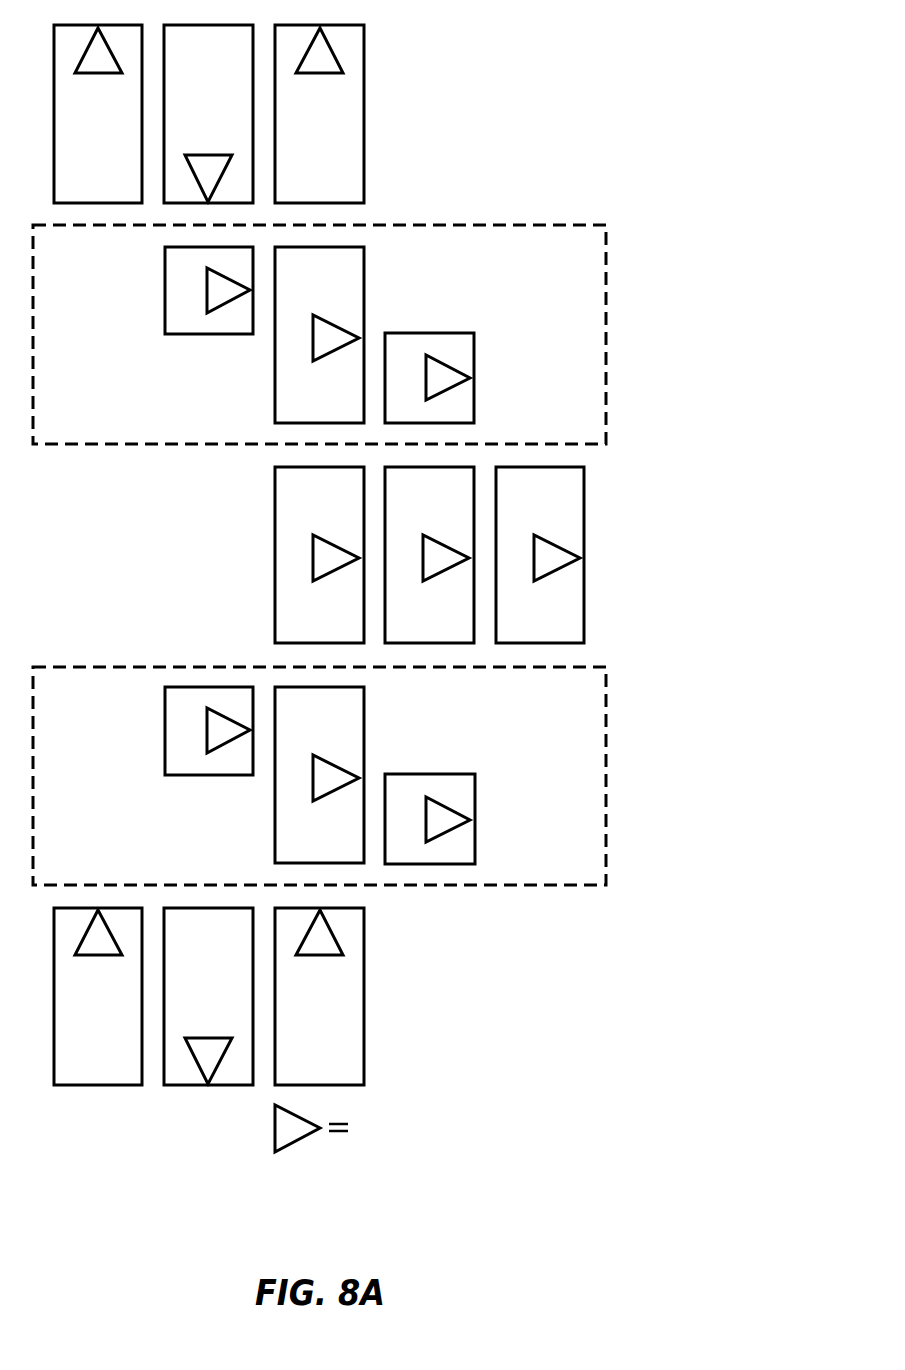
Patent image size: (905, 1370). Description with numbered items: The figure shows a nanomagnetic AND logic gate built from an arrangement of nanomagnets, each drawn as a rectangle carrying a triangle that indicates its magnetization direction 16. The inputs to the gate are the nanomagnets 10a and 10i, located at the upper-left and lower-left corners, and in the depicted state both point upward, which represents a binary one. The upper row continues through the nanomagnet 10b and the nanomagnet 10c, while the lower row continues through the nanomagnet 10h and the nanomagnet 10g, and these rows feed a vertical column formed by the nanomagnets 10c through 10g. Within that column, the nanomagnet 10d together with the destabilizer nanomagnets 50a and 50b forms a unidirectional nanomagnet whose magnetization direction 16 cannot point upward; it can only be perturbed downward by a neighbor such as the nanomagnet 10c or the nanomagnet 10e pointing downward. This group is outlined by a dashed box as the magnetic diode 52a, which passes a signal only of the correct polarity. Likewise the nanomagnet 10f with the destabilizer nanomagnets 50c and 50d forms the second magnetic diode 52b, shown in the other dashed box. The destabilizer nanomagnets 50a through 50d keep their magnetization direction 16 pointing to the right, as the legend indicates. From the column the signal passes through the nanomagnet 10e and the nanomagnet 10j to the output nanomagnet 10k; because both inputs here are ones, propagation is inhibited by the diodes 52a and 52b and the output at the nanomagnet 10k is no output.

The nanomagnet 10a is at (69, 125).
The nanomagnet 10b is at (238, 125).
The nanomagnet 10c is at (290, 125).
The nanomagnet 10d is at (290, 295).
The nanomagnet 10e is at (290, 515).
The nanomagnet 10f is at (294, 736).
The nanomagnet 10g is at (290, 1002).
The nanomagnet 10h is at (238, 1002).
The nanomagnet 10i is at (75, 1002).
The nanomagnet 10j is at (404, 515).
The nanomagnet 10k is at (512, 515).
The destabilizer nanomagnet 50a is at (164, 292).
The destabilizer nanomagnet 50b is at (475, 358).
The destabilizer nanomagnet 50c is at (164, 727).
The destabilizer nanomagnet 50d is at (476, 798).
The magnetic diode 52a is at (606, 271).
The magnetic diode 52b is at (606, 722).
The magnetization direction 16 is at (435, 1139).